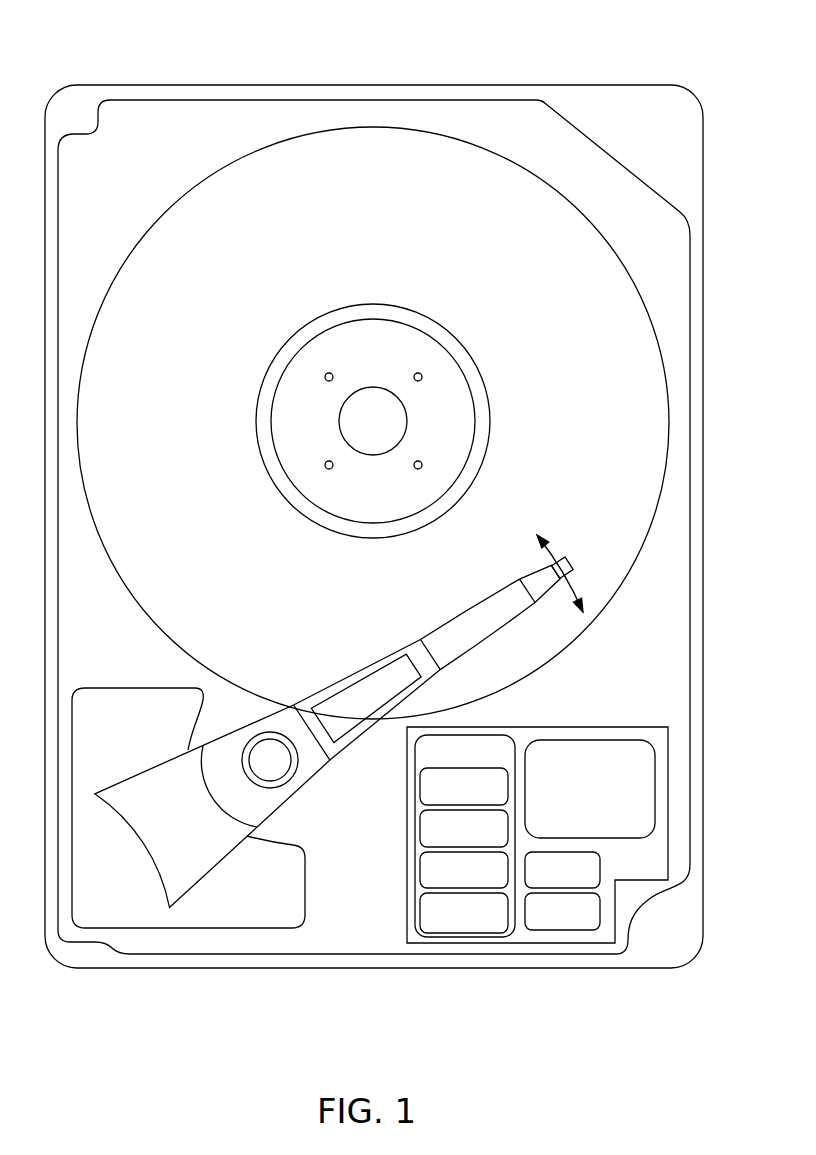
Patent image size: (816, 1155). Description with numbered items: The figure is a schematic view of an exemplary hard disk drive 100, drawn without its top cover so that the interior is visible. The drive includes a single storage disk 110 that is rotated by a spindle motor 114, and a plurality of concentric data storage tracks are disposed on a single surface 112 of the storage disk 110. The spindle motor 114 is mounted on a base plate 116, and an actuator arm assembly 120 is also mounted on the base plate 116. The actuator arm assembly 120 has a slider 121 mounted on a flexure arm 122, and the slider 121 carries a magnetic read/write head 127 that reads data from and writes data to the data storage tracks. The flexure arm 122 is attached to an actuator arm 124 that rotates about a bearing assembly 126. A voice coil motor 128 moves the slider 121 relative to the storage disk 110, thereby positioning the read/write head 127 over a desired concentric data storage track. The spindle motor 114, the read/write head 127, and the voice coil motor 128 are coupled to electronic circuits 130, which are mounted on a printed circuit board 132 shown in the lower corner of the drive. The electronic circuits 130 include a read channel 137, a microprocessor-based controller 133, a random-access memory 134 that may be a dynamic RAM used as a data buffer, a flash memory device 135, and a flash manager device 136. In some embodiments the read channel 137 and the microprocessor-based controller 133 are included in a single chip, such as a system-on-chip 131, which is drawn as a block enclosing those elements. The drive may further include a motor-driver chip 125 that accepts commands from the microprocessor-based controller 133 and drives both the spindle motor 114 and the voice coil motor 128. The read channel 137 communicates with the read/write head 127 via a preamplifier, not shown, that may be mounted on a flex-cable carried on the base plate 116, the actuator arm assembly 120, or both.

The hard disk drive 100 is at (133, 58).
The storage disk 110 is at (167, 212).
The surface 112 is at (193, 404).
The spindle motor 114 is at (461, 366).
The base plate 116 is at (690, 552).
The actuator arm assembly 120 is at (370, 655).
The slider 121 is at (572, 560).
The flexure arm 122 is at (535, 574).
The actuator arm 124 is at (432, 626).
The motor-driver chip 125 is at (580, 882).
The bearing assembly 126 is at (288, 792).
The magnetic read/write head 127 is at (562, 552).
The voice coil motor 128 is at (307, 872).
The electronic circuits 130 is at (535, 795).
The system-on-chip 131 is at (482, 766).
The printed circuit board 132 is at (608, 726).
The microprocessor-based controller 133 is at (482, 801).
The random-access memory 134 is at (580, 924).
The flash memory device 135 is at (607, 803).
The flash manager device 136 is at (482, 841).
The read channel 137 is at (482, 882).